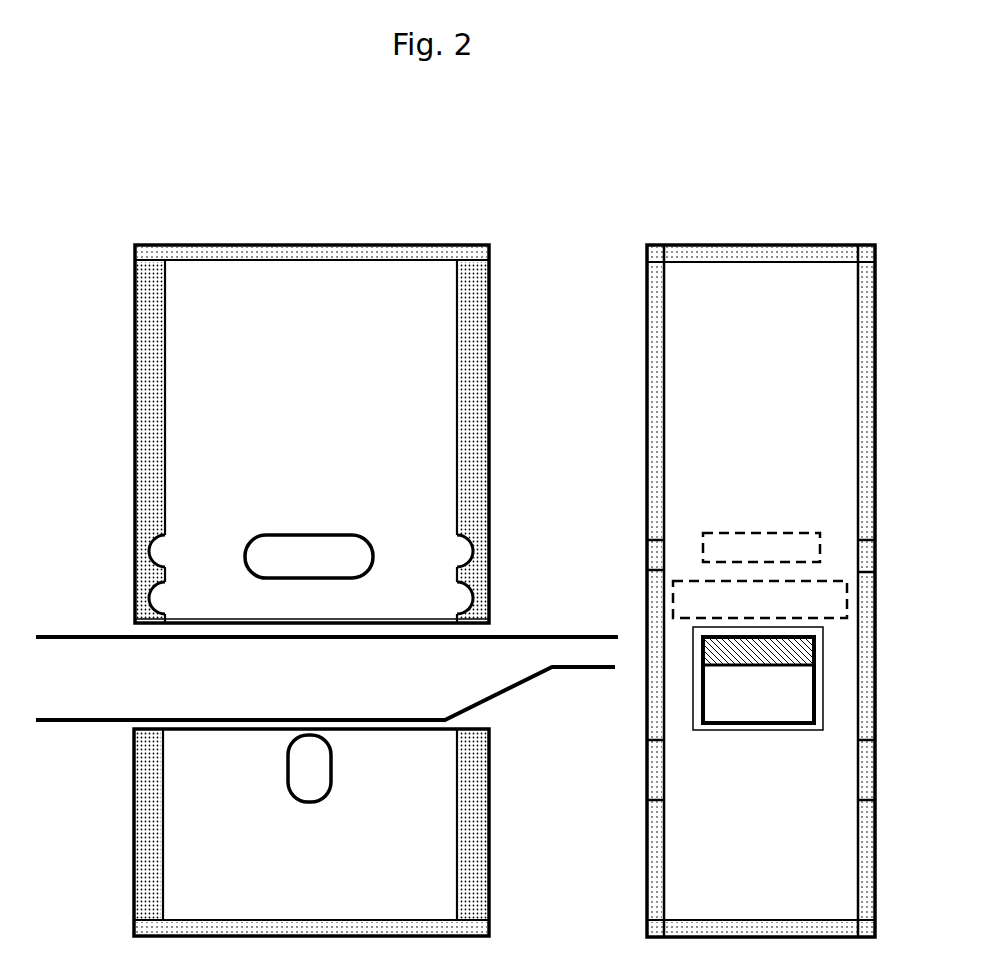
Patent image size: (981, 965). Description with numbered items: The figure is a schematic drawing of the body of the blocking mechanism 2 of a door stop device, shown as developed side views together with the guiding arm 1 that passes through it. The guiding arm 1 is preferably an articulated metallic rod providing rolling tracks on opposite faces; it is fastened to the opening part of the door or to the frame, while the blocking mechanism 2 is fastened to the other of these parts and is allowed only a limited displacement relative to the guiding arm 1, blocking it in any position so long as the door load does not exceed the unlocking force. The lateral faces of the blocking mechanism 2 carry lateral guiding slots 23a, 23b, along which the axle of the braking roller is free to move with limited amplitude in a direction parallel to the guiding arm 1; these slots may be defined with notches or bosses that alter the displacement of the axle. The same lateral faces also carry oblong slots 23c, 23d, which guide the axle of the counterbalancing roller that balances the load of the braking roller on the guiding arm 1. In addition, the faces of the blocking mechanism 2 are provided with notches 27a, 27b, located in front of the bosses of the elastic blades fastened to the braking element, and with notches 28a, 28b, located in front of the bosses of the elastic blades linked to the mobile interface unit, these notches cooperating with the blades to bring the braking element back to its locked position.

The guiding arm 1 is at (733, 658).
The blocking mechanism 2 is at (656, 308).
The lateral guiding slot 23a is at (312, 550).
The lateral guiding slot 23b is at (866, 553).
The oblong slot 23c is at (317, 765).
The oblong slot 23d is at (866, 778).
The notch 27a is at (162, 550).
The notch 27b is at (740, 553).
The notch 28a is at (162, 600).
The notch 28b is at (718, 603).